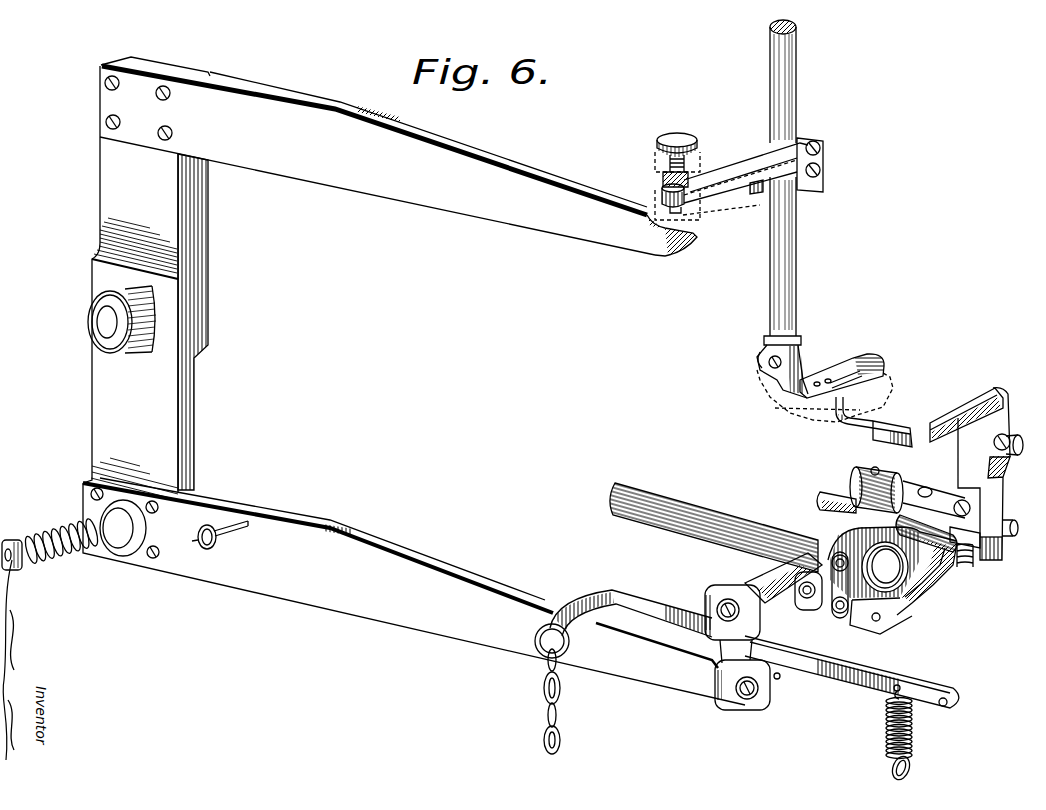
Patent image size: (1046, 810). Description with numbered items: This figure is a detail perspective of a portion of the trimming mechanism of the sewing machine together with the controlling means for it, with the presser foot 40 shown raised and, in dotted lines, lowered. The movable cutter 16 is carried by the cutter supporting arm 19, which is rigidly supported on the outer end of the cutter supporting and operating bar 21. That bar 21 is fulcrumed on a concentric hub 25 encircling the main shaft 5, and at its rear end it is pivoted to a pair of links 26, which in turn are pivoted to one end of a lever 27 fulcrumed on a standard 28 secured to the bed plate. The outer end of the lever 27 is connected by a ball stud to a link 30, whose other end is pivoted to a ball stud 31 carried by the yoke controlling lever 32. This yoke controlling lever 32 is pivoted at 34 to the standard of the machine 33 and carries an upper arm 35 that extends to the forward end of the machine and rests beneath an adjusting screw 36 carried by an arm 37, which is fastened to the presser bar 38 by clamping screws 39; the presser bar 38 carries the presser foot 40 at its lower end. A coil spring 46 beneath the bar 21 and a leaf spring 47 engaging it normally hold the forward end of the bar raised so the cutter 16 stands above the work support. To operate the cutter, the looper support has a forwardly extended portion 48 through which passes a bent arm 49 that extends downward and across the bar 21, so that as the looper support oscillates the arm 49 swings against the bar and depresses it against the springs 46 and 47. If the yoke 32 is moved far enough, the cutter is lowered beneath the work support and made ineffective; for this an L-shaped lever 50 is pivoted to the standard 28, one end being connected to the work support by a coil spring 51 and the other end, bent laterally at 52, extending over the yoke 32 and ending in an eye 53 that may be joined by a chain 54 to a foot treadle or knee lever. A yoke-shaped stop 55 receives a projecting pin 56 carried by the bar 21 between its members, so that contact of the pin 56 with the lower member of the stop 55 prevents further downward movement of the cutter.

The main shaft 5 is at (717, 512).
The movable cutter 16 is at (863, 402).
The cutter supporting arm 19 is at (955, 420).
The cutter supporting and operating bar 21 is at (937, 587).
The concentric hub 25 is at (895, 600).
The links 26 is at (835, 612).
The lever 27 is at (752, 582).
The standard 28 is at (777, 670).
The link 30 is at (720, 703).
The ball stud 31 is at (748, 702).
The yoke controlling lever 32 is at (302, 543).
The upright post 33 is at (158, 382).
The pivot 34 is at (100, 321).
The upper arm 35 is at (440, 187).
The adjusting screw 36 is at (681, 133).
The arm 37 is at (716, 173).
The presser bar 38 is at (797, 254).
The clamping screws 39 is at (823, 165).
The presser foot 40 is at (797, 375).
The coil spring 46 is at (975, 566).
The leaf spring 47 is at (910, 585).
The forwardly extended portion 48 is at (906, 491).
The bent arm 49 is at (965, 550).
The L-shaped lever 50 is at (853, 683).
The coil spring 51 is at (917, 736).
The laterally bent portion 52 is at (583, 605).
The eye 53 is at (545, 632).
The chain 54 is at (561, 723).
The stop 55 is at (1002, 552).
The projecting pin 56 is at (1006, 522).